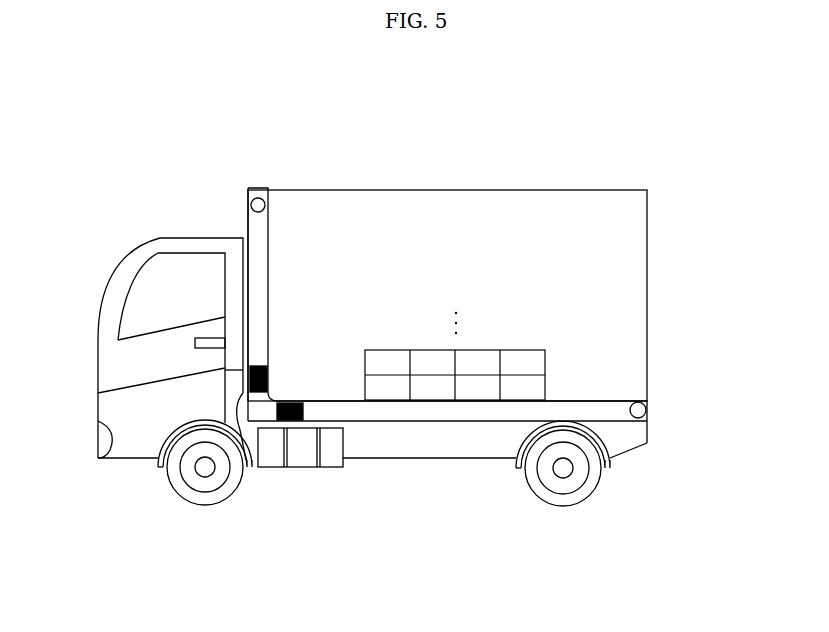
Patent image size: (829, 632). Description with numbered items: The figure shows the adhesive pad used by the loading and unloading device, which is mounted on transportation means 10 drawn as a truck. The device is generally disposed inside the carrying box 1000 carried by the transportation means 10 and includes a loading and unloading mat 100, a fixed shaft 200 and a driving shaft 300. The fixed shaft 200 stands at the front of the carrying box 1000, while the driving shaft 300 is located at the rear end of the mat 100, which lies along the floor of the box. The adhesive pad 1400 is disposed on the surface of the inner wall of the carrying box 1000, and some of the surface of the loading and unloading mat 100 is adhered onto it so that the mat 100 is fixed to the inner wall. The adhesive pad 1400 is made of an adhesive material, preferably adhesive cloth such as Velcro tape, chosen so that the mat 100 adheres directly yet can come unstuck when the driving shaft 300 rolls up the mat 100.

The transportation means 10 is at (133, 276).
The loading and unloading mat 100 is at (403, 403).
The fixed shaft 200 is at (268, 190).
The driving shaft 300 is at (647, 406).
The carrying box 1000 is at (551, 190).
The adhesive pad 1400 is at (247, 412).